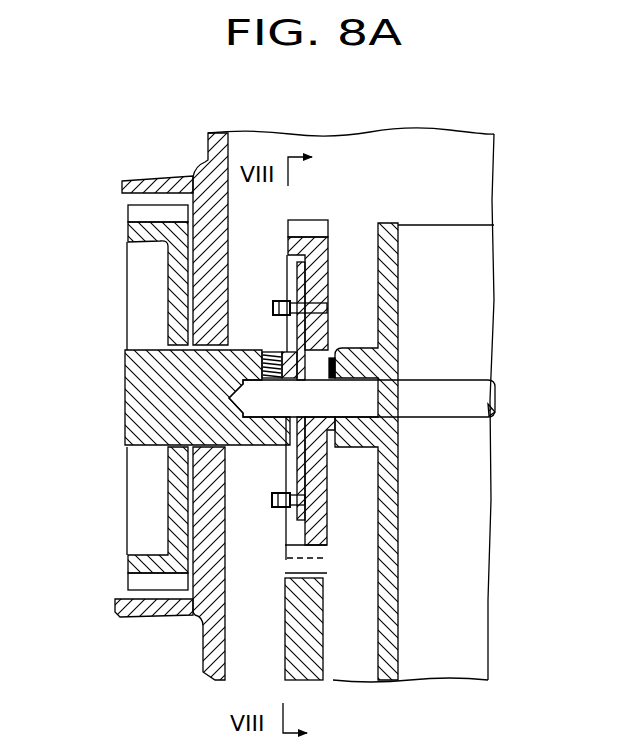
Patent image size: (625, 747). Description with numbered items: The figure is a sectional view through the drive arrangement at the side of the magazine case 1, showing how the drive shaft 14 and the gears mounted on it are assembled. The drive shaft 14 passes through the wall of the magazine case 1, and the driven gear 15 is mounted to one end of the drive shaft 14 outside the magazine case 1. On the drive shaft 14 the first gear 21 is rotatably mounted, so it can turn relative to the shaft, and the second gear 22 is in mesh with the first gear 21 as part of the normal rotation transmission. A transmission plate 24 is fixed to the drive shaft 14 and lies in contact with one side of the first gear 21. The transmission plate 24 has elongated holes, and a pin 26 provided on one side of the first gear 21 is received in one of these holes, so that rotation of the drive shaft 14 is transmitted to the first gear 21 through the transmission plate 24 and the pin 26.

The magazine case 1 is at (203, 138).
The drive shaft 14 is at (458, 390).
The driven gear 15 is at (125, 560).
The first gear 21 is at (320, 222).
The second gear 22 is at (295, 637).
The transmission plate 24 is at (300, 454).
The pin 26 is at (285, 300).